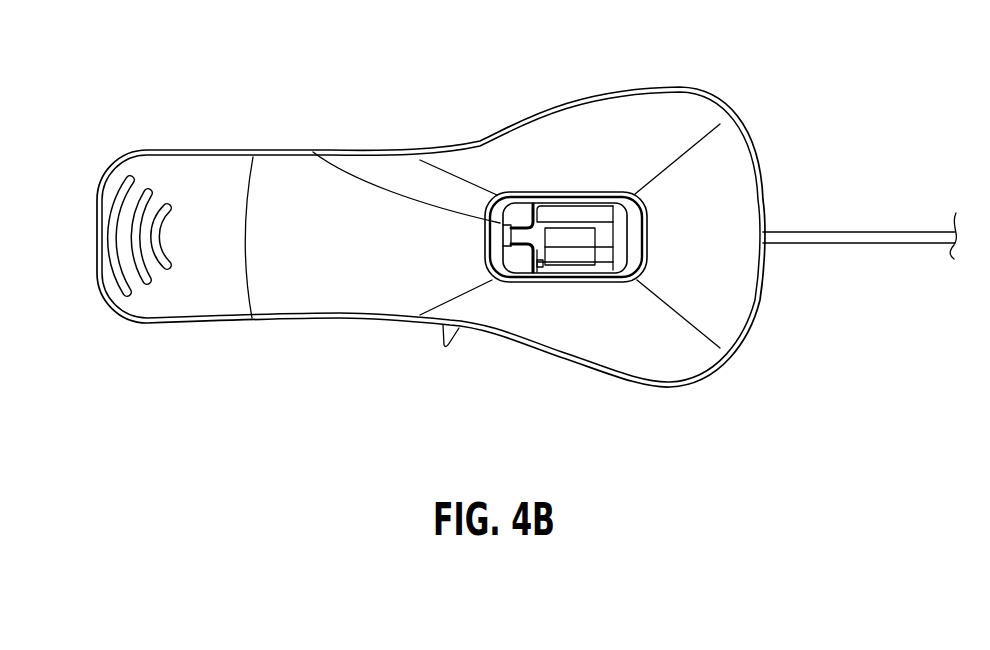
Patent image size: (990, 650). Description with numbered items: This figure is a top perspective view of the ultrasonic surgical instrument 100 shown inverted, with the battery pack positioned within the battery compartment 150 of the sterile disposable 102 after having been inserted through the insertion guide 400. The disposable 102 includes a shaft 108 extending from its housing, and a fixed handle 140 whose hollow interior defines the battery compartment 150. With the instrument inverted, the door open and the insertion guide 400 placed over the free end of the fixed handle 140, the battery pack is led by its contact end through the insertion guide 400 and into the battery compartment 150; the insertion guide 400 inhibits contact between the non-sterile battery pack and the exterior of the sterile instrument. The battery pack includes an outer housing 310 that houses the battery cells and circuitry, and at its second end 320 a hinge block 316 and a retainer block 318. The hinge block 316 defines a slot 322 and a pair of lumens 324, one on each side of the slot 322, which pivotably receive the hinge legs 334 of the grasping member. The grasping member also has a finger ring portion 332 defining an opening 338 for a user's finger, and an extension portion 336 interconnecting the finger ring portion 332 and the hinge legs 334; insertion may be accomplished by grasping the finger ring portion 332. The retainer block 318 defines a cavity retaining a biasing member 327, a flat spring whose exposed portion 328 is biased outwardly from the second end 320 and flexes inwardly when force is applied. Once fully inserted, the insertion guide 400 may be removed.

The ultrasonic surgical instrument 100 is at (886, 279).
The sterile disposable 102 is at (445, 347).
The shaft 108 is at (880, 232).
The fixed handle 140 is at (508, 197).
The battery compartment 150 is at (497, 197).
The outer housing 310 is at (643, 260).
The hinge block 316 is at (493, 265).
The retainer block 318 is at (577, 233).
The second end 320 is at (630, 237).
The slot 322 is at (493, 238).
The lumen 324 is at (500, 215).
The biasing member 327 is at (532, 276).
The exposed portion 328 is at (538, 274).
The finger ring portion 332 is at (628, 218).
The hinge legs 334 is at (318, 156).
The extension portion 336 is at (533, 198).
The opening 338 is at (625, 192).
The insertion guide 400 is at (185, 158).